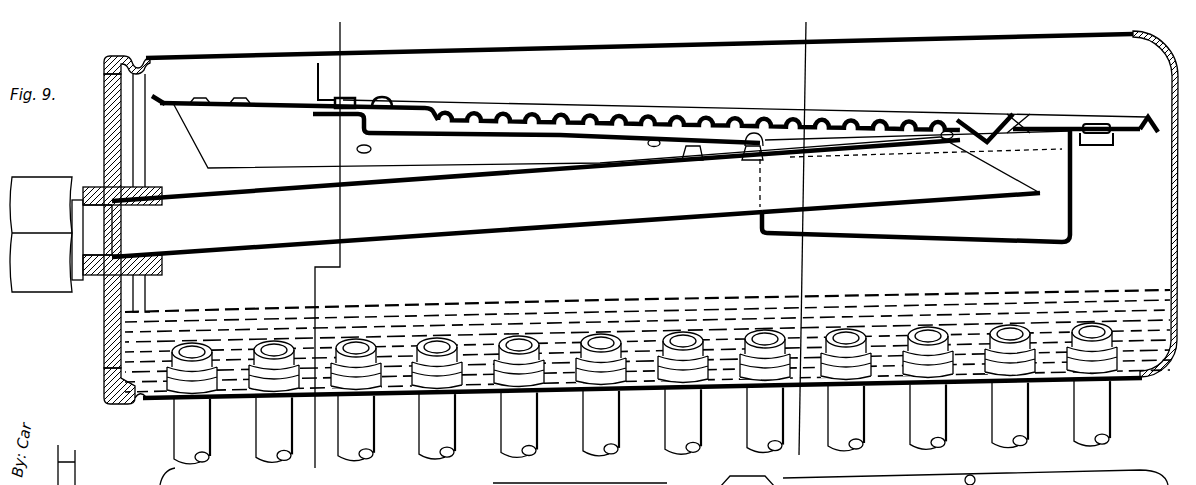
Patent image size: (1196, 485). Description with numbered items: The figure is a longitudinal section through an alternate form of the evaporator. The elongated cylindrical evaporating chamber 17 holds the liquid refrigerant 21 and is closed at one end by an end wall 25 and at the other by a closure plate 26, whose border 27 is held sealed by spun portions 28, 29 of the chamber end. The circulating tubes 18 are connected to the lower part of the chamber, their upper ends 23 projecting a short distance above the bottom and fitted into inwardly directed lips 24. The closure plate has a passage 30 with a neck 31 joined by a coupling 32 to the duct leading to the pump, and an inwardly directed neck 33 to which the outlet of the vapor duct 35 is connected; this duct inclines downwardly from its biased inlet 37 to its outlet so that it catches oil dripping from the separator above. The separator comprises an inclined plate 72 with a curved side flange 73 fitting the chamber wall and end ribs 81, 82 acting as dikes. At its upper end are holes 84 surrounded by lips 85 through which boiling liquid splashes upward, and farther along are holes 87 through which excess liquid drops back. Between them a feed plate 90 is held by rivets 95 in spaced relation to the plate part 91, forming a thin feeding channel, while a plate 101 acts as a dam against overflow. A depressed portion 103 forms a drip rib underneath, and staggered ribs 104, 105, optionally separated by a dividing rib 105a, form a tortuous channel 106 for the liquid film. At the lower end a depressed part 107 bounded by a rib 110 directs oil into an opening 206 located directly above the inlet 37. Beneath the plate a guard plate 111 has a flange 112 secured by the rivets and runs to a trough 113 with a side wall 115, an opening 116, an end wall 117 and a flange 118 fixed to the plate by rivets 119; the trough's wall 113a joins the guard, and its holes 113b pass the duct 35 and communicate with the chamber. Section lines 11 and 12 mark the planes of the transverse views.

The duct 11 is at (298, 428).
The serpentine coil 12 is at (786, 417).
The evaporating chamber or drum 17 is at (592, 47).
The circulating tubes 18 is at (590, 433).
The liquid refrigerant 21 is at (672, 300).
The upper ends of the tubes 23 is at (1096, 322).
The inwardly directed lips or flanges 24 is at (1092, 362).
The end wall 25 is at (1172, 215).
The closure plate 26 is at (106, 345).
The border 27 is at (118, 400).
The spun portion 28 is at (108, 388).
The spun portion 29 is at (143, 404).
The passage 30 is at (92, 222).
The neck 31 is at (83, 268).
The fitting or coupling 32 is at (47, 180).
The inwardly directed neck 33 is at (152, 195).
The vapor duct 35 is at (497, 240).
The vapor inlet 37 is at (606, 148).
The inclined plate or apron 72 is at (637, 101).
The curved side flange 73 is at (570, 165).
The upwardly extending rib 81 is at (164, 95).
The upwardly extending rib 82 is at (1146, 120).
The holes 84 is at (202, 109).
The upwardly extending lips 85 is at (195, 101).
The holes 87 is at (372, 131).
The plate 90 is at (371, 99).
The plate part 91 is at (333, 117).
The rivet 95 is at (346, 99).
The plate 101 is at (316, 77).
The depressed portion 103 is at (440, 128).
The upwardly pressed ribs or barriers 104 is at (736, 101).
The upwardly pressed ribs or barriers 105 is at (725, 103).
The dividing rib 105a is at (592, 100).
The tortuous path or channel 106 is at (765, 107).
The depressed part 107 is at (981, 142).
The barrier or rib 110 is at (1022, 124).
The guard plate 111 is at (532, 137).
The flange 112 is at (322, 114).
The trough 113 is at (888, 238).
The wall 113a is at (762, 228).
The holes 113b is at (760, 178).
The side flange or wall 115 is at (1042, 212).
The opening or aperture 116 is at (1040, 245).
The end wall 117 is at (1072, 223).
The flange 118 is at (1108, 136).
The rivets 119 is at (1095, 124).
The opening 206 is at (981, 143).